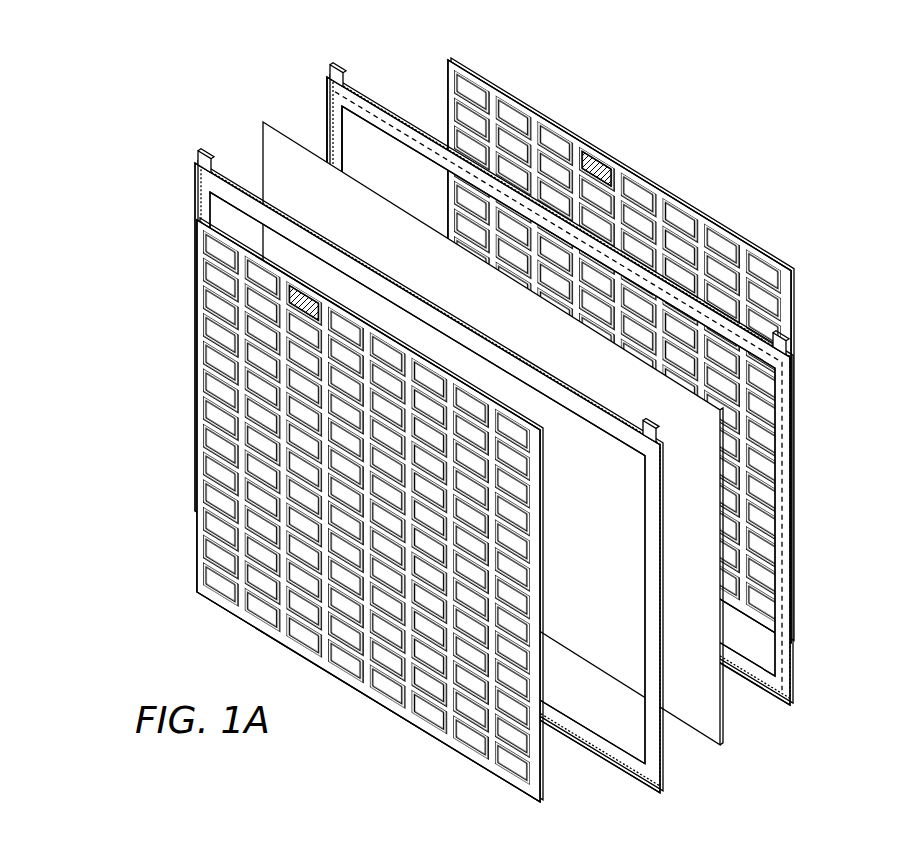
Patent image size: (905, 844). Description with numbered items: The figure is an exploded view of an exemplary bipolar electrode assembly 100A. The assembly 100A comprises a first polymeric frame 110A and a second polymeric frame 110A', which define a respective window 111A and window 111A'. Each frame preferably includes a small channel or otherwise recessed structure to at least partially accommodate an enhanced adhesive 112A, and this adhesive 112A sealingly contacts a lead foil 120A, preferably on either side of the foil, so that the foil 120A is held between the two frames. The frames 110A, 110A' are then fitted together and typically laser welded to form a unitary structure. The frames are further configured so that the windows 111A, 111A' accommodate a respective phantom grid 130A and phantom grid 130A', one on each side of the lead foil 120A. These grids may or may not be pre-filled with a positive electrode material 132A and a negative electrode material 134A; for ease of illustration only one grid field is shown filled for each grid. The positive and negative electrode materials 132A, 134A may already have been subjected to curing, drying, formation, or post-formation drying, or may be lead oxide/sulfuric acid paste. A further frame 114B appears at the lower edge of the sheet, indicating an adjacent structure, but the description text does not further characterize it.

The bipolar electrode assembly 100A is at (740, 148).
The first polymeric frame 110A is at (504, 363).
The second polymeric frame 110A' is at (385, 473).
The window 111A is at (558, 360).
The window 111A' is at (428, 515).
The enhanced adhesive 112A is at (336, 73).
The frame of adjacent assembly 114B is at (228, 843).
The lead foil 120A is at (720, 745).
The phantom grid 130A is at (621, 345).
The phantom grid 130A' is at (319, 510).
The positive electrode material 132A is at (594, 166).
The negative electrode material 134A is at (300, 300).